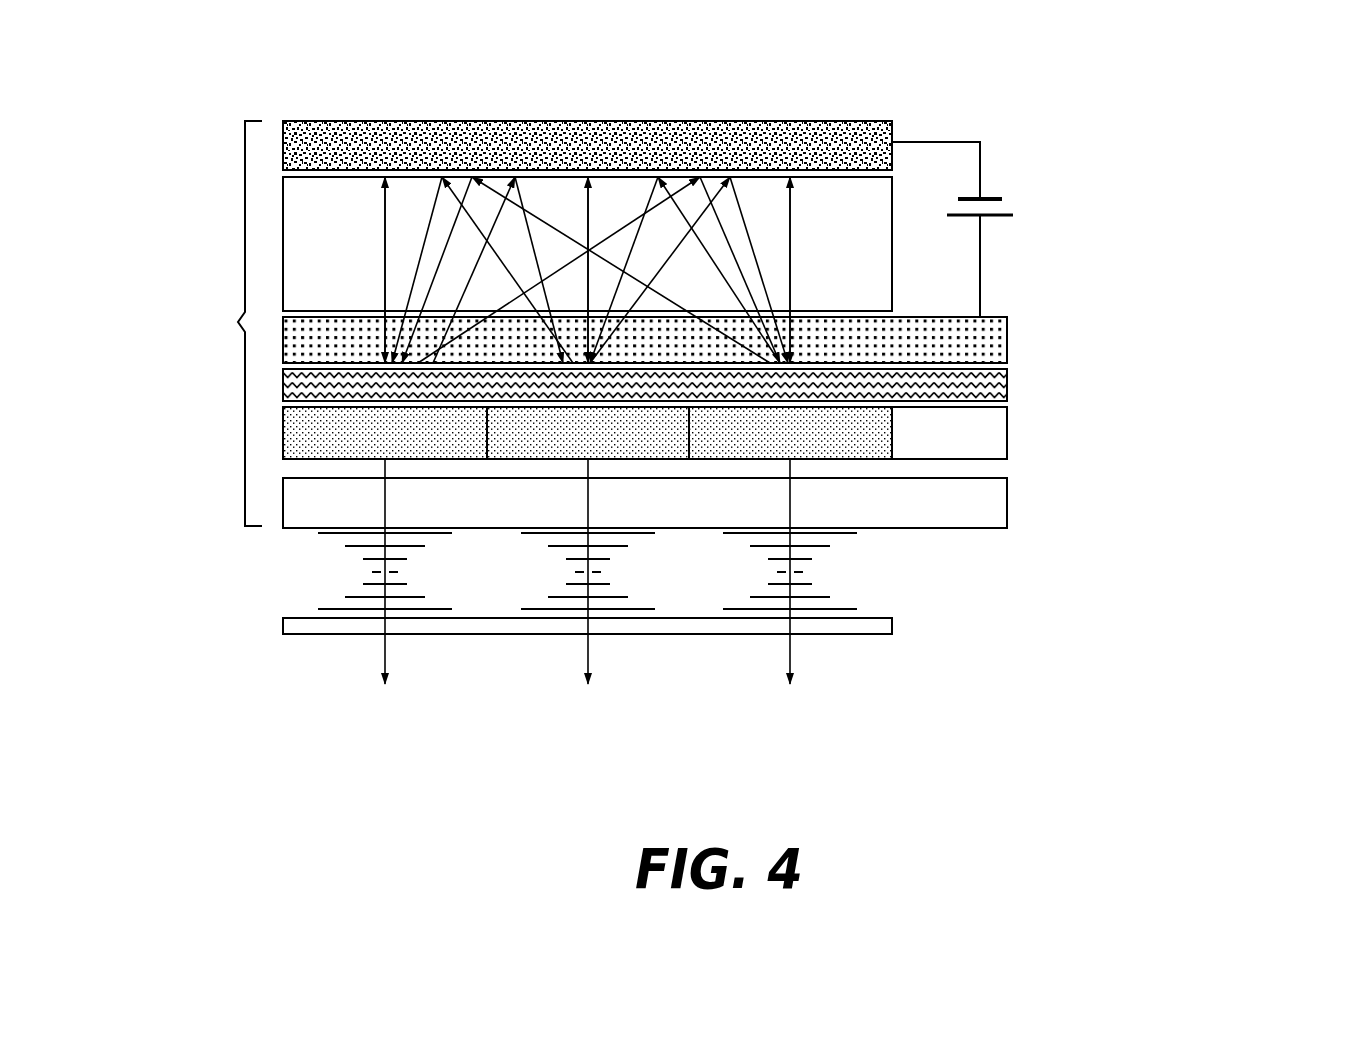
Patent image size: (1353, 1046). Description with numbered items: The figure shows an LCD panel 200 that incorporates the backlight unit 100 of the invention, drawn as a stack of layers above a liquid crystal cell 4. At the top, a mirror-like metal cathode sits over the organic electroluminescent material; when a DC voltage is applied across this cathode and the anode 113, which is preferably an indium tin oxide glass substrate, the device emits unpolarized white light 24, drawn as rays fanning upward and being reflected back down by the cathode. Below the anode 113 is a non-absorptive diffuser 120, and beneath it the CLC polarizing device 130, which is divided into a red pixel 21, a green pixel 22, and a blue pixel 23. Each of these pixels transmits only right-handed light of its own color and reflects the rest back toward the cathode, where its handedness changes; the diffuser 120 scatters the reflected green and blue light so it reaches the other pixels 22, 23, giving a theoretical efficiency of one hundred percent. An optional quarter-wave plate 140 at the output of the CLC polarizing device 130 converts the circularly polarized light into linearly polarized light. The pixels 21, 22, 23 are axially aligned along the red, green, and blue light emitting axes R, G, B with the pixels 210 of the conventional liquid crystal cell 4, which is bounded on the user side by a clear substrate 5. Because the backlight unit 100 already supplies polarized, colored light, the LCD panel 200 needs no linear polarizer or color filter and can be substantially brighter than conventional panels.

The LCD panel 200 is at (1102, 97).
The backlight unit 100 is at (238, 322).
The unpolarized white light 24 is at (858, 272).
The anode 113 is at (1007, 345).
The non-absorptive diffuser 120 is at (1007, 386).
The CLC polarizing device 130 is at (1007, 434).
The red pixel 21 is at (402, 446).
The green pixel 22 is at (605, 446).
The blue pixel 23 is at (807, 446).
The quarter-wave plate 140 is at (1007, 507).
The pixels 210 is at (359, 569).
The liquid crystal cell 4 is at (900, 587).
The clear substrate 5 is at (283, 623).
The red light emitting axis R is at (383, 603).
The green light emitting axis G is at (586, 603).
The blue light emitting axis B is at (788, 603).